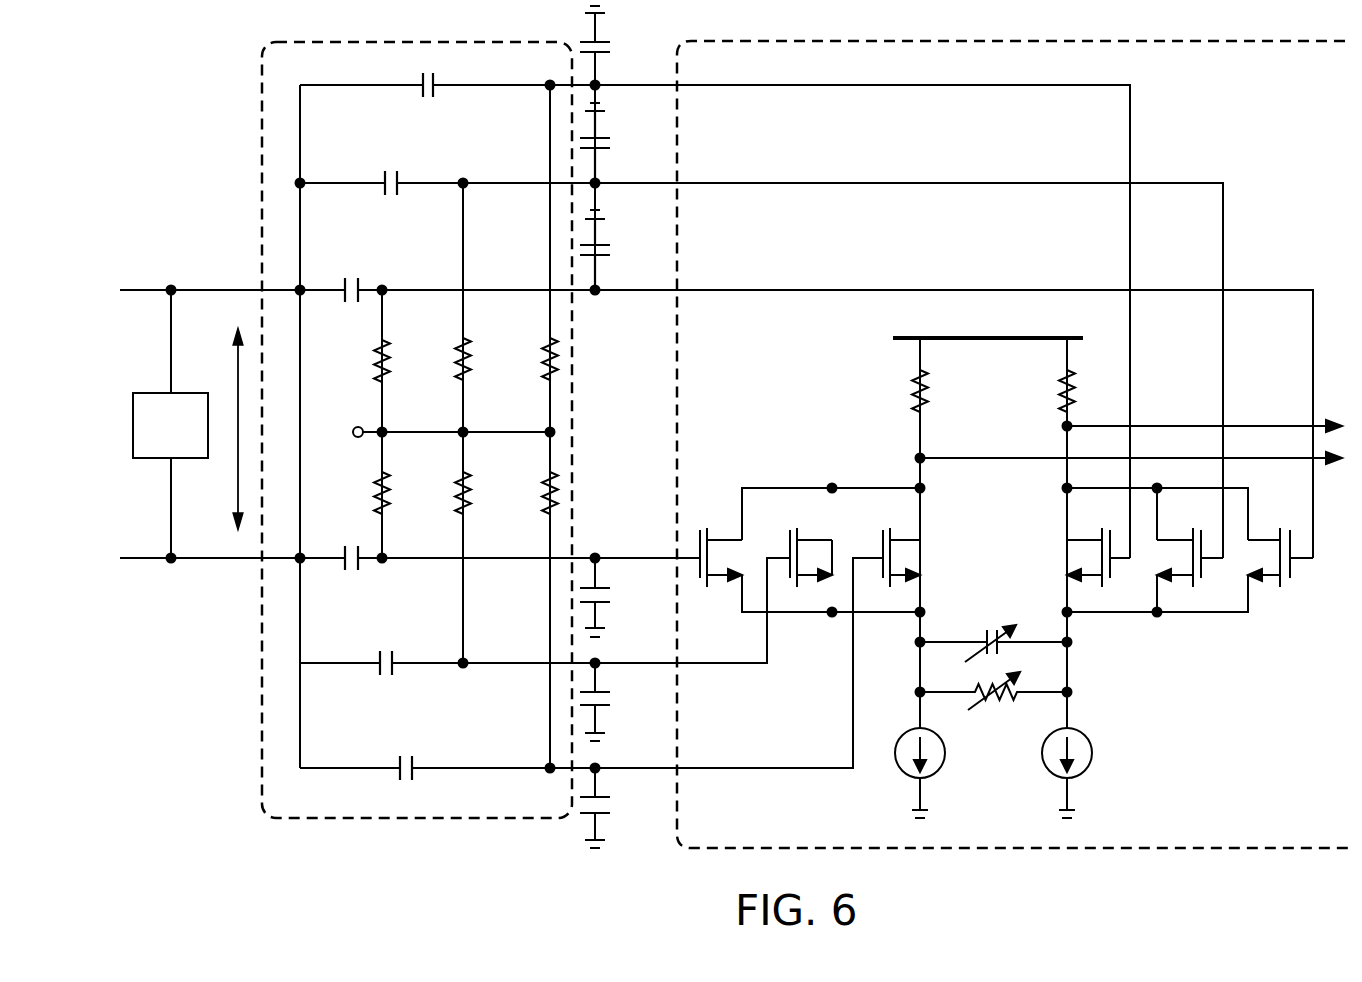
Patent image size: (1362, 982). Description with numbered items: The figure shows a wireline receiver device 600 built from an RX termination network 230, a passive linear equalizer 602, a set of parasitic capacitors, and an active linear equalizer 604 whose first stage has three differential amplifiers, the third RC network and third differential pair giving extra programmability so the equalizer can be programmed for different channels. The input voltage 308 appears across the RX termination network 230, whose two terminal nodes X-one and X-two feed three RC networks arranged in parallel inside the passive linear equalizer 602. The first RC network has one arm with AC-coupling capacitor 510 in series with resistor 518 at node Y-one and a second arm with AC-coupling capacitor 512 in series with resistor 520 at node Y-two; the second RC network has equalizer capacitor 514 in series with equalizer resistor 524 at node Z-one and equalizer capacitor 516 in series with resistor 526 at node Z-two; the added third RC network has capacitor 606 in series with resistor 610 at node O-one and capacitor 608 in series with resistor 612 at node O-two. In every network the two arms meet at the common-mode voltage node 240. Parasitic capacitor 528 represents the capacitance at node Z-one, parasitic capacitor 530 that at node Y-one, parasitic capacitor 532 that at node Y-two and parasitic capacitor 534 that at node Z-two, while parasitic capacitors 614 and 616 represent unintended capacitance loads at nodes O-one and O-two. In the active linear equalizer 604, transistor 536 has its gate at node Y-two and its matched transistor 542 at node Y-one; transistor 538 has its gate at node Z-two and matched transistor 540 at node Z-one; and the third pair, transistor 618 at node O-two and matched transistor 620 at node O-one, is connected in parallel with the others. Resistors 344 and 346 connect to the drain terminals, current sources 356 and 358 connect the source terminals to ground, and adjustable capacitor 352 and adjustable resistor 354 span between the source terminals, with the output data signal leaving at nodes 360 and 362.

The wireline receiver device 600 is at (193, 56).
The RX termination network 230 is at (147, 392).
The input voltage Vin 308 is at (238, 429).
The common-mode voltage node 240 is at (335, 444).
The AC-coupling capacitor 510 is at (352, 266).
The AC-coupling capacitor 512 is at (339, 585).
The equalizer capacitor 514 is at (393, 190).
The equalizer capacitor 516 is at (383, 668).
The resistor 518 is at (361, 369).
The resistor 520 is at (362, 503).
The equalizer resistor 524 is at (439, 363).
The resistor 526 is at (440, 498).
The parasitic capacitor 528 is at (619, 143).
The parasitic capacitor 530 is at (619, 250).
The parasitic capacitor 532 is at (620, 614).
The parasitic capacitor 534 is at (620, 718).
The transistor 536 is at (816, 570).
The transistor 538 is at (726, 570).
The transistor 540 is at (1276, 570).
The transistor 542 is at (1181, 570).
The passive linear equalizer 602 is at (418, 454).
The active linear equalizer 604 is at (1013, 429).
The capacitor 606 is at (431, 93).
The capacitor 608 is at (408, 770).
The resistor 610 is at (525, 363).
The resistor 612 is at (526, 498).
The parasitic capacitor 614 is at (619, 36).
The parasitic capacitor 616 is at (619, 823).
The transistor 618 is at (908, 570).
The transistor 620 is at (1088, 570).
The resistor 344 is at (955, 391).
The resistor 346 is at (1087, 386).
The adjustable capacitor 352 is at (993, 621).
The adjustable resistor 354 is at (993, 717).
The current source 356 is at (946, 756).
The current source 358 is at (1093, 756).
The output node 360 is at (1106, 458).
The output node 362 is at (1202, 438).